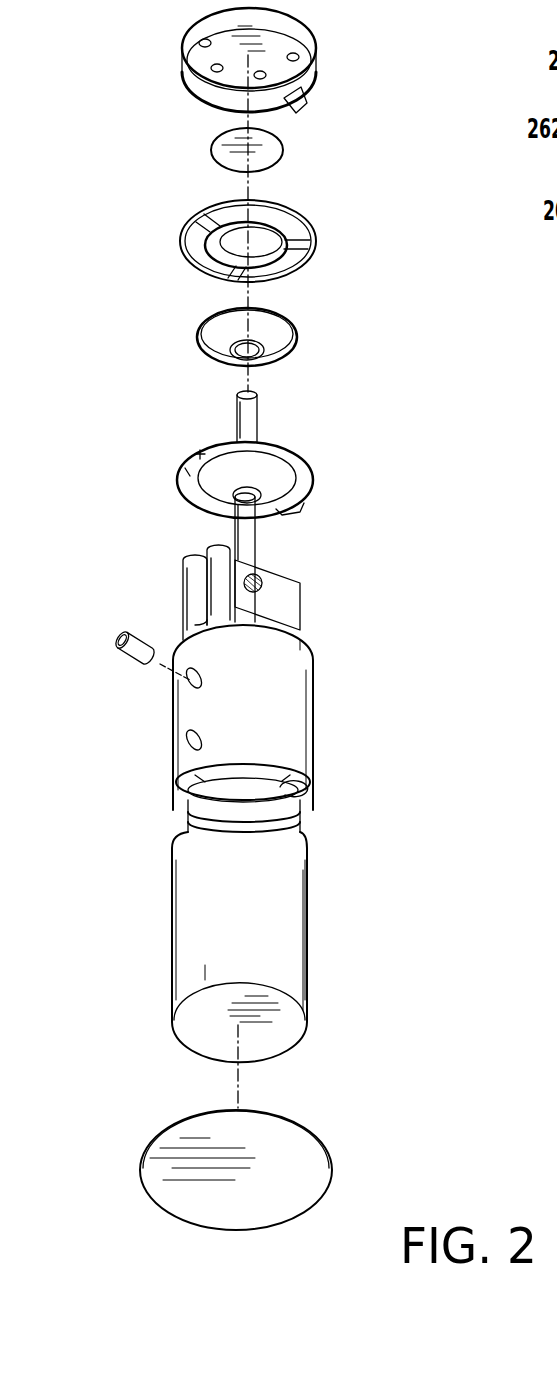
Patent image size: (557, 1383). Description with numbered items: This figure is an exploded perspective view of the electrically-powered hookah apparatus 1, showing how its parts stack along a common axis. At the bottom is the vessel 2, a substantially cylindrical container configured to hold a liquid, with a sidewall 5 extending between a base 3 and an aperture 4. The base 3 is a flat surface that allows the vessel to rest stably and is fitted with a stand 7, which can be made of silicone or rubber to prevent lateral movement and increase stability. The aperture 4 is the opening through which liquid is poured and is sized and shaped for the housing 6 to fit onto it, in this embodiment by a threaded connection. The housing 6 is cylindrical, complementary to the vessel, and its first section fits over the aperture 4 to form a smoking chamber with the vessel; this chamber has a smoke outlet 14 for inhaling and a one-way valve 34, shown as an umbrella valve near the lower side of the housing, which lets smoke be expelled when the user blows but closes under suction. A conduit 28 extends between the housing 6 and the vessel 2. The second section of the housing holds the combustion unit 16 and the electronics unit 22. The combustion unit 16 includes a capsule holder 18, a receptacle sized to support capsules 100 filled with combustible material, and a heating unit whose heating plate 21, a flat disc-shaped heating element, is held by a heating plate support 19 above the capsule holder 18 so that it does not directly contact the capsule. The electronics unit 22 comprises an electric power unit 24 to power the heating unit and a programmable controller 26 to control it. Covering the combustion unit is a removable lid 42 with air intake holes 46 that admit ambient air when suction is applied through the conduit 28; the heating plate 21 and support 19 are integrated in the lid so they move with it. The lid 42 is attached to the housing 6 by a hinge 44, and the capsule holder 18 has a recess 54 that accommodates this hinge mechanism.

The hookah apparatus 1 is at (113, 967).
The vessel 2 is at (187, 892).
The base 3 is at (257, 1028).
The aperture 4 is at (210, 788).
The sidewall 5 is at (288, 923).
The housing 6 is at (300, 725).
The stand 7 is at (280, 1204).
The smoke outlet 14 is at (190, 732).
The combustion unit 16 is at (337, 308).
The capsule holder 18 is at (188, 472).
The heating plate support 19 is at (302, 233).
The heating plate 21 is at (220, 155).
The electronics unit 22 is at (412, 623).
The electric power unit 24 is at (190, 585).
The programmable controller 26 is at (288, 605).
The conduit 28 is at (252, 423).
The one-way valve 34 is at (293, 788).
The removable lid 42 is at (314, 42).
The hinge 44 is at (307, 101).
The air intake holes 46 is at (215, 71).
The recess 54 is at (293, 499).
The capsules 100 is at (220, 335).